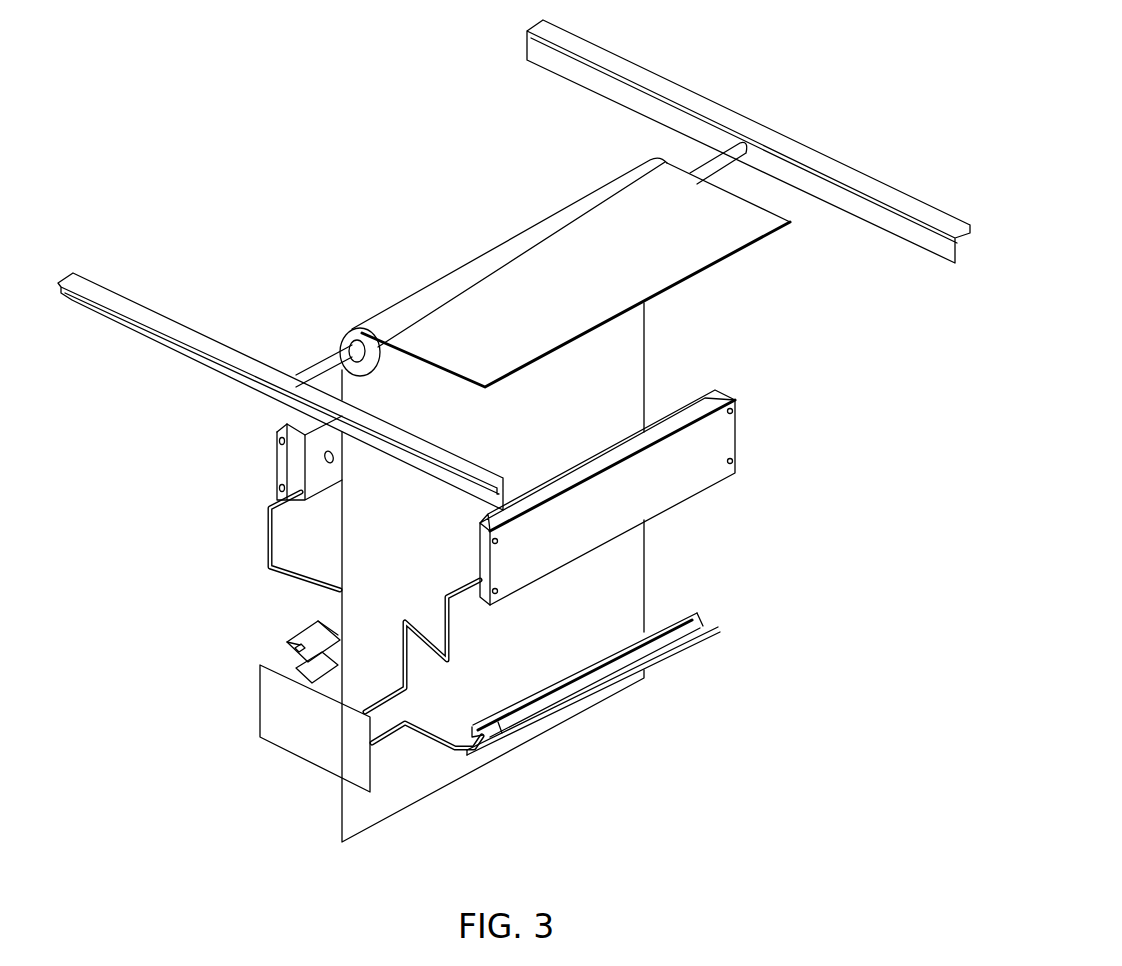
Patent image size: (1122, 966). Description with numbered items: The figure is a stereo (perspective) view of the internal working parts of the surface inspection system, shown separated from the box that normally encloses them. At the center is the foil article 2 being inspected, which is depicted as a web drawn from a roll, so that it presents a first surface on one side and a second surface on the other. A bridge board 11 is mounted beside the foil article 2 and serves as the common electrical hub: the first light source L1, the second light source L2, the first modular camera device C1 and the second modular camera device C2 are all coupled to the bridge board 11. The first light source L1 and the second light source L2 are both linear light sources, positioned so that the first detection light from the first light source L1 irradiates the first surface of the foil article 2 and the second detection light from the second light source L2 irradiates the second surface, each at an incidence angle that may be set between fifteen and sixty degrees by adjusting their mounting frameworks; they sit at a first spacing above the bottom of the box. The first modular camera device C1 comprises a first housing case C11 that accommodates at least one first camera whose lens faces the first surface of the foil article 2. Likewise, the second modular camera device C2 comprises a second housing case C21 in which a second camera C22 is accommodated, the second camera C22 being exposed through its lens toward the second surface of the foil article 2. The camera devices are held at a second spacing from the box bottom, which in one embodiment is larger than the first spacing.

The foil article 2 is at (753, 230).
The bridge board 11 is at (265, 727).
The first modular camera device C1 is at (748, 437).
The first housing case C11 is at (680, 417).
The second modular camera device C2 is at (246, 463).
The second housing case C21 is at (307, 430).
The second camera C22 is at (325, 459).
The first light source L1 is at (703, 627).
The second light source L2 is at (302, 638).